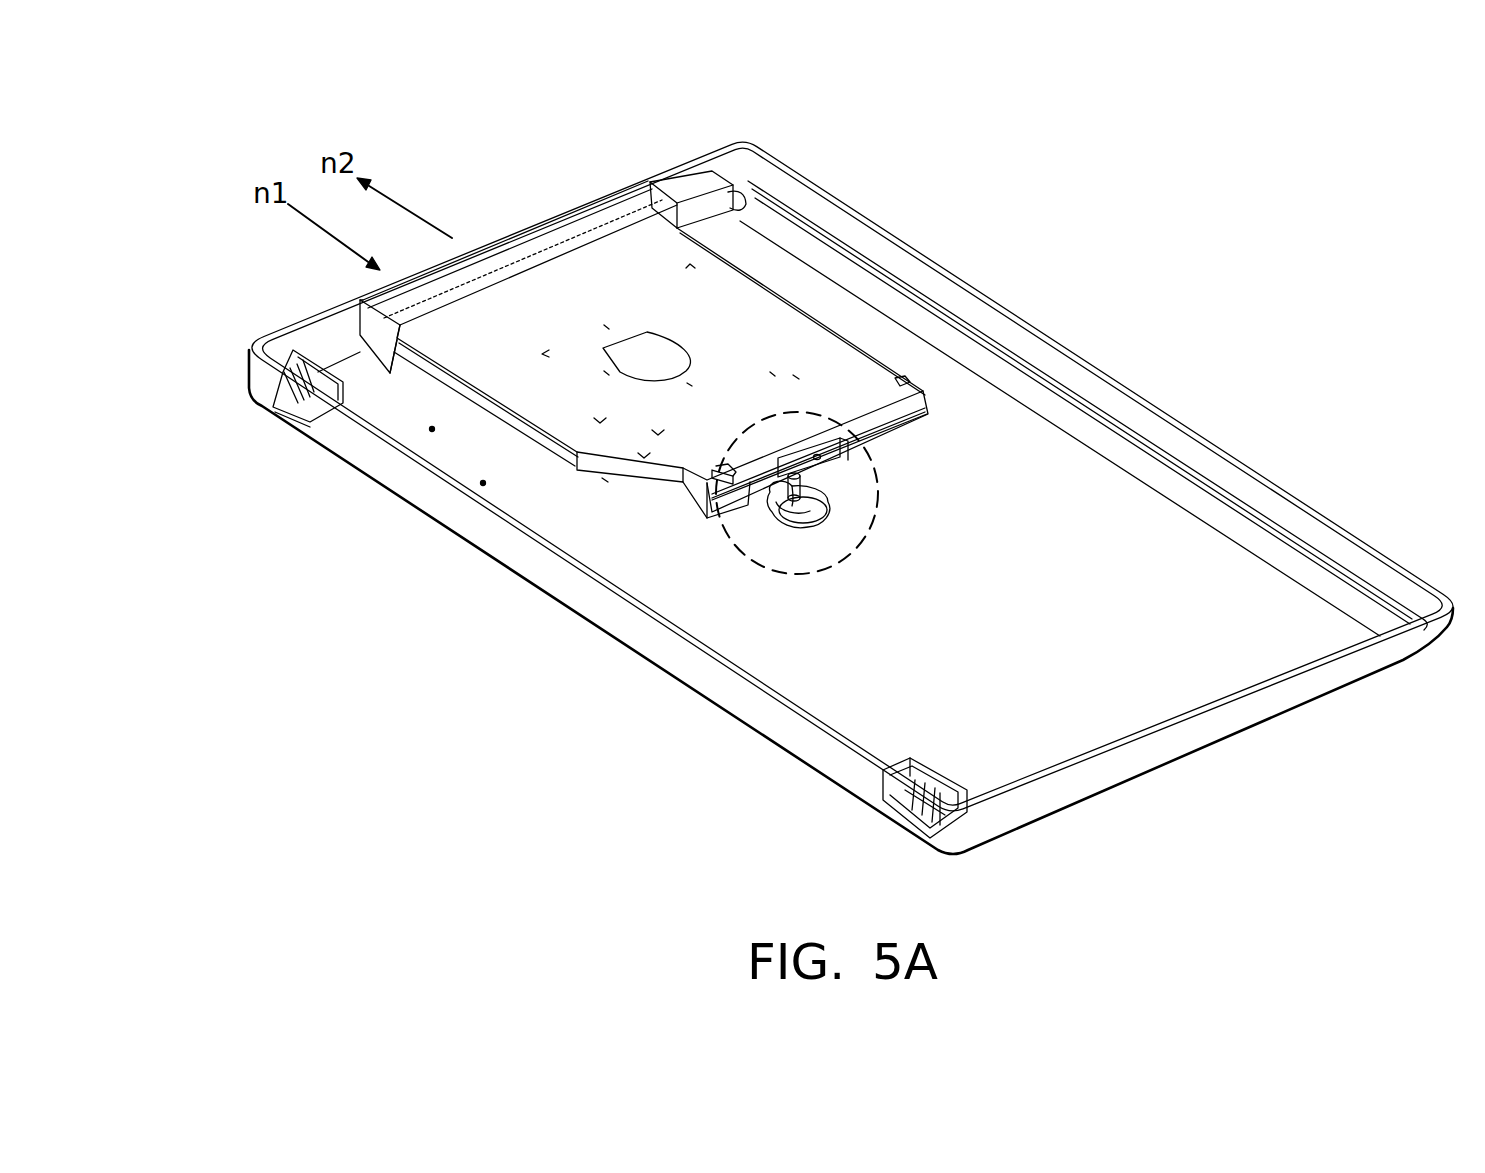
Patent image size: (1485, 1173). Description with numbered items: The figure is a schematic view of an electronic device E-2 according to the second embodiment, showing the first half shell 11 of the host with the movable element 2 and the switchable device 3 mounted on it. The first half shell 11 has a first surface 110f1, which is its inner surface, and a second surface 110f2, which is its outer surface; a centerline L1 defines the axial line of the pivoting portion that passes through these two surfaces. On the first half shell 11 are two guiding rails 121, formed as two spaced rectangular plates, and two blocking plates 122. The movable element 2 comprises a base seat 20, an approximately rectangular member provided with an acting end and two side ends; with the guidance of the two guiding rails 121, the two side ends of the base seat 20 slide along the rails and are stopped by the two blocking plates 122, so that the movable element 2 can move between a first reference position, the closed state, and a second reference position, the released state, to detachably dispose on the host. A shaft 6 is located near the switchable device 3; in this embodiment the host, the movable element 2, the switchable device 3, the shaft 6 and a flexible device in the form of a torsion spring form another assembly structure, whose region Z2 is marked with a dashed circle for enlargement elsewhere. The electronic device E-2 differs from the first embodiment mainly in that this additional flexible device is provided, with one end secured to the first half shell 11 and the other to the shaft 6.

The first half shell 11 is at (340, 442).
The first surface 110f1 is at (432, 429).
The second surface 110f2 is at (483, 483).
The movable element 2 is at (537, 311).
The base seat 20 is at (732, 324).
The guiding rails 121 is at (867, 348).
The blocking plates 122 is at (925, 430).
The switchable device 3 is at (829, 503).
The shaft 6 is at (806, 487).
The region Z2 is at (875, 508).
The centerline L1- L1 is at (795, 478).
The electronic device E-2 is at (190, 188).